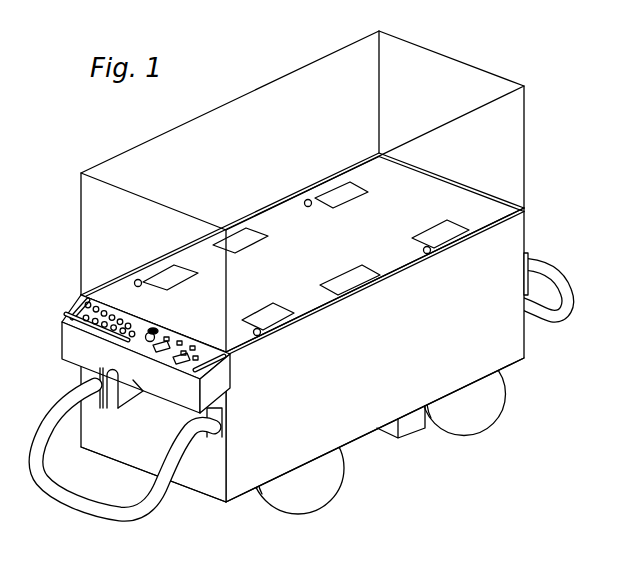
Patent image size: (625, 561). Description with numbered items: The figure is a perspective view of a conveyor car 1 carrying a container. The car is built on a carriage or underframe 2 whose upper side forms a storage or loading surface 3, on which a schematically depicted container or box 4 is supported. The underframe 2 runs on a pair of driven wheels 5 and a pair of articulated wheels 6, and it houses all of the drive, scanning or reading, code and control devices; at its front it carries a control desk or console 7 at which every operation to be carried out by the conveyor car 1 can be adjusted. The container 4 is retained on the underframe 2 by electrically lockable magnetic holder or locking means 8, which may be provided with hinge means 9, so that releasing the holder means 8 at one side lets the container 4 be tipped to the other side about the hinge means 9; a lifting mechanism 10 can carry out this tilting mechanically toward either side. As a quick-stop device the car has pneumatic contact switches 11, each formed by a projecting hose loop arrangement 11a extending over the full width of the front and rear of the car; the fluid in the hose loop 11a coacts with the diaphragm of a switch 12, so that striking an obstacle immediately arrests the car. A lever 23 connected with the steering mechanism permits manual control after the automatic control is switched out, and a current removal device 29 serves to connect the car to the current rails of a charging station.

The conveyor car 1 is at (313, 383).
The carriage or underframe 2 is at (363, 431).
The storage or loading surface 3 is at (501, 209).
The container or box 4 is at (406, 55).
The driven wheels 5 is at (485, 412).
The articulated wheels 6 is at (321, 503).
The control desk or console 7 is at (70, 311).
The magnetic holder or locking means 8 is at (163, 276).
The hinge means 9 is at (137, 279).
The lifting mechanism 10 is at (247, 239).
The pneumatic contact switches 11 is at (543, 277).
The hose loop arrangement 11a is at (145, 511).
The switch 12 is at (230, 427).
The lever 23 is at (128, 399).
The current removal device 29 is at (407, 436).